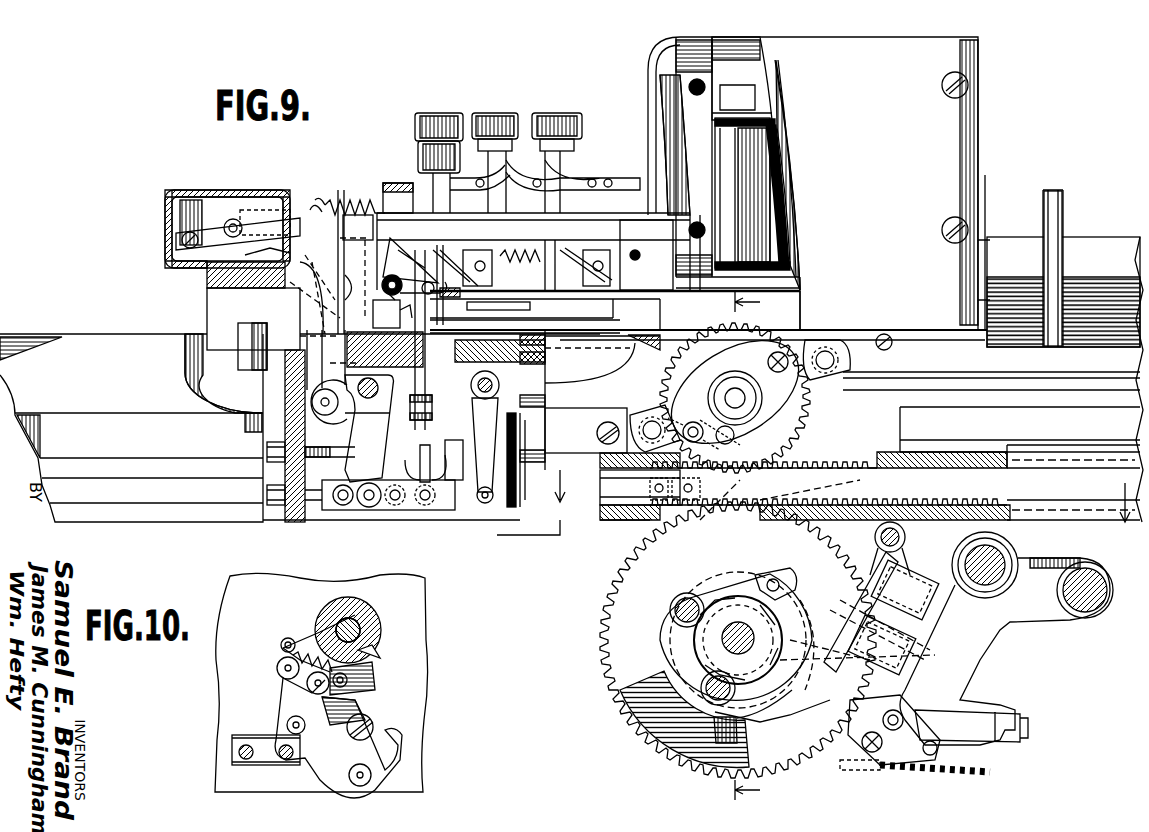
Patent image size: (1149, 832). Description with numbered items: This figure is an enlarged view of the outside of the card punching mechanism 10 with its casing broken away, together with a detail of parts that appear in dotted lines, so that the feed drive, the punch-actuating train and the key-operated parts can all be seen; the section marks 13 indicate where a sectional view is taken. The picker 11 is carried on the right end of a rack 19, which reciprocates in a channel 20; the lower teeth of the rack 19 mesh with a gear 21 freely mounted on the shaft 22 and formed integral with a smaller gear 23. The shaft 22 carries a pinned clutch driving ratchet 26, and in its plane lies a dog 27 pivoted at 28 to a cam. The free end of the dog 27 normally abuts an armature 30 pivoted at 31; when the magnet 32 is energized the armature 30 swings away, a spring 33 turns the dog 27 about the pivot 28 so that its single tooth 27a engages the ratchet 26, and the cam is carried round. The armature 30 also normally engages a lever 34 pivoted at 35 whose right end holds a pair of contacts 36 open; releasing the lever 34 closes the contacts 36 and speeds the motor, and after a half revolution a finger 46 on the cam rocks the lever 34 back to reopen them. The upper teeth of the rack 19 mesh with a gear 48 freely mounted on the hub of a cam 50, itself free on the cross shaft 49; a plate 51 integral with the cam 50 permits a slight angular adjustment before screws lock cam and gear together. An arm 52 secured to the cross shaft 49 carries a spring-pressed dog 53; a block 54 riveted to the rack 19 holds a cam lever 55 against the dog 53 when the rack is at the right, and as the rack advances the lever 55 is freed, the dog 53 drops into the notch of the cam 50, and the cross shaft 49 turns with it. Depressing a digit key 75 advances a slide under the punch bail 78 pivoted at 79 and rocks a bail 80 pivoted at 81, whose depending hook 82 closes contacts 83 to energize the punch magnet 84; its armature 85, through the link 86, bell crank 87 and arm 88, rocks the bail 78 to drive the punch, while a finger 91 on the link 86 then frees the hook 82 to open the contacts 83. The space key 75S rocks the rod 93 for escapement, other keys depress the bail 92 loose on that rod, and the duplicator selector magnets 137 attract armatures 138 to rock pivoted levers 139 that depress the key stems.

In FIG. 9, the platen 10 is at (1085, 275).
In FIG. 9, the picker 11 is at (737, 546).
In FIG. 9, the section line 13 is at (836, 506).
In FIG. 9, the rack 19 is at (988, 478).
In FIG. 9, the channel 20 is at (1083, 470).
In FIG. 9, the gear 21 is at (605, 658).
In FIG. 9, the shaft 22 is at (722, 637).
In FIG. 9, the smaller gear 23 is at (778, 580).
In FIG. 9, the clutch driving ratchet 26 is at (722, 600).
In FIG. 9, the dog 27 is at (662, 665).
In FIG. 9, the single tooth 27a is at (680, 675).
In FIG. 9, the pivot 28 is at (678, 603).
In FIG. 9, the armature 30 is at (855, 605).
In FIG. 9, the pivot 31 is at (905, 537).
In FIG. 9, the magnet 32 is at (893, 617).
In FIG. 9, the spring 33 is at (800, 610).
In FIG. 9, the lever 34 is at (770, 725).
In FIG. 9, the pivot 35 is at (893, 765).
In FIG. 9, the contacts 36 is at (1002, 712).
In FIG. 9, the finger 46 is at (1000, 560).
In FIG. 9, the gear 48 is at (790, 425).
In FIG. 9, the cross shaft 49 is at (735, 398).
In FIG. 10, the cross shaft 49 is at (352, 632).
In FIG. 10, the cam 50 is at (365, 632).
In FIG. 9, the plate 51 is at (775, 385).
In FIG. 9, the arm 52 is at (700, 395).
In FIG. 10, the arm 52 is at (305, 628).
In FIG. 10, the spring-pressed dog 53 is at (368, 688).
In FIG. 9, the block 54 is at (650, 488).
In FIG. 10, the block 54 is at (262, 742).
In FIG. 9, the cam lever 55 is at (778, 478).
In FIG. 10, the cam lever 55 is at (290, 697).
In FIG. 9, the digit representing keys 75 is at (555, 128).
In FIG. 9, the space key 75S is at (415, 160).
In FIG. 9, the punch bail 78 is at (215, 228).
In FIG. 9, the pivot 79 is at (178, 242).
In FIG. 9, the bail 80 is at (388, 260).
In FIG. 9, the pivot 81 is at (385, 289).
In FIG. 9, the hook 82 is at (445, 327).
In FIG. 9, the contacts 83 is at (424, 408).
In FIG. 9, the punch magnet 84 is at (518, 470).
In FIG. 9, the armature 85 is at (482, 455).
In FIG. 9, the link 86 is at (450, 495).
In FIG. 9, the bell crank 87 is at (362, 432).
In FIG. 9, the arm 88 is at (300, 235).
In FIG. 9, the finger 91 is at (418, 452).
In FIG. 9, the bail 92 is at (246, 287).
In FIG. 9, the rod 93 is at (302, 314).
In FIG. 9, the selector magnets 137 is at (748, 185).
In FIG. 9, the armature 138 is at (760, 116).
In FIG. 9, the pivoted lever 139 is at (665, 100).